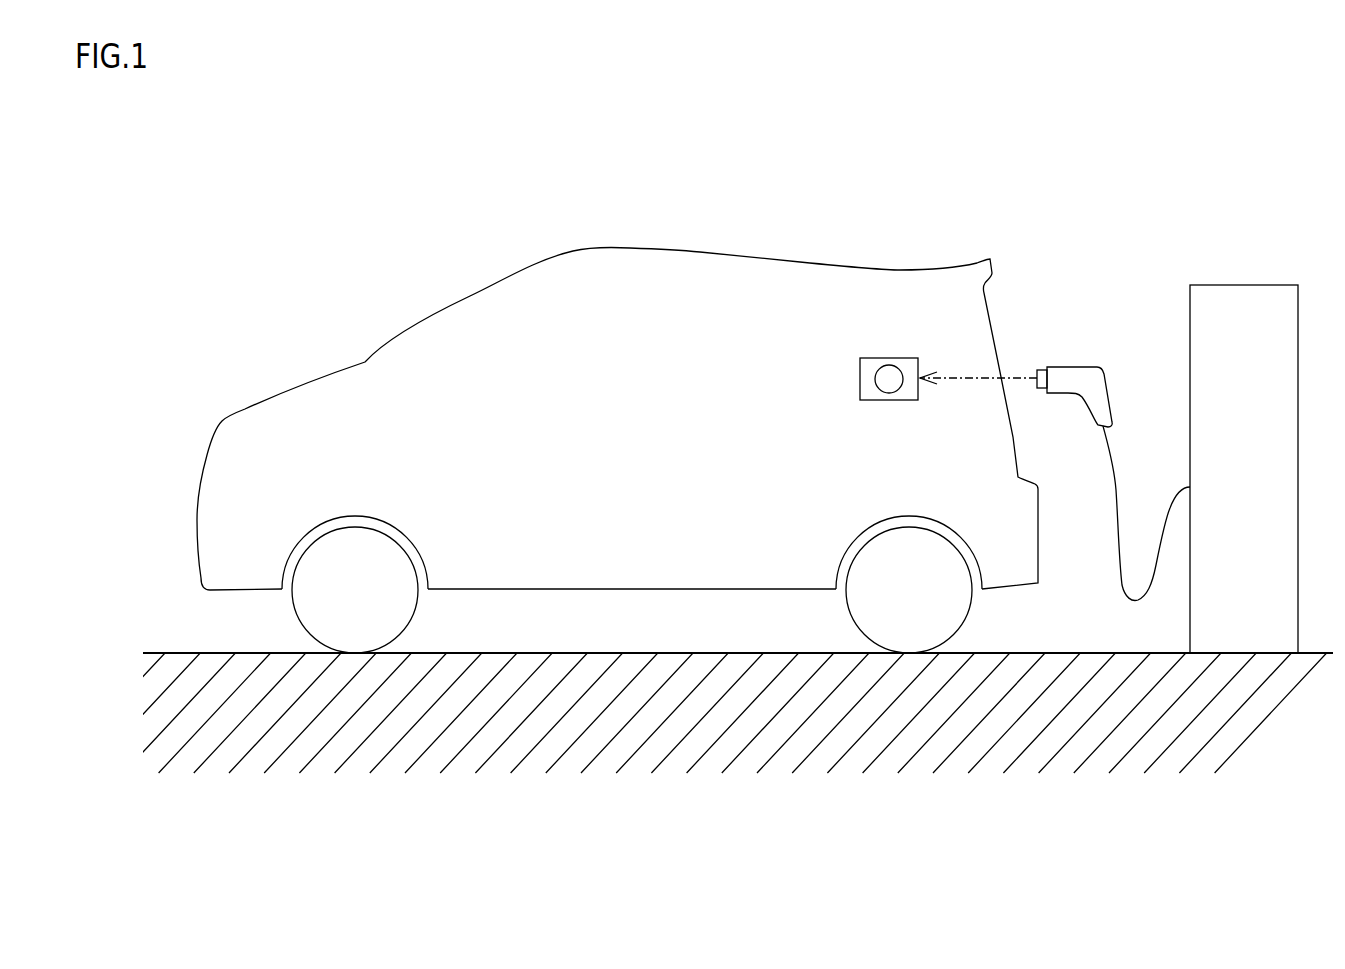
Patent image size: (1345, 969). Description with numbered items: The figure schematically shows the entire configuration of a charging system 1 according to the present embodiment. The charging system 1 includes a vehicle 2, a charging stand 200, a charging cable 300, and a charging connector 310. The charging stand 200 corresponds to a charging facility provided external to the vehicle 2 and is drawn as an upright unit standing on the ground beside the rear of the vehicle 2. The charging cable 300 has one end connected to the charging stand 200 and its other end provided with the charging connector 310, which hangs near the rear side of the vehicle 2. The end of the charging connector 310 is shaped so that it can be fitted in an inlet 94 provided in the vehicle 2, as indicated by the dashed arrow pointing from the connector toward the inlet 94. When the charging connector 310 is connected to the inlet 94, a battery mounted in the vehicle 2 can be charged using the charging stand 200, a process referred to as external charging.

The charging system 1 is at (1240, 139).
The vehicle 2 is at (700, 251).
The inlet 94 is at (890, 357).
The charging stand 200 is at (1250, 284).
The charging cable 300 is at (1117, 507).
The charging connector 310 is at (1073, 367).